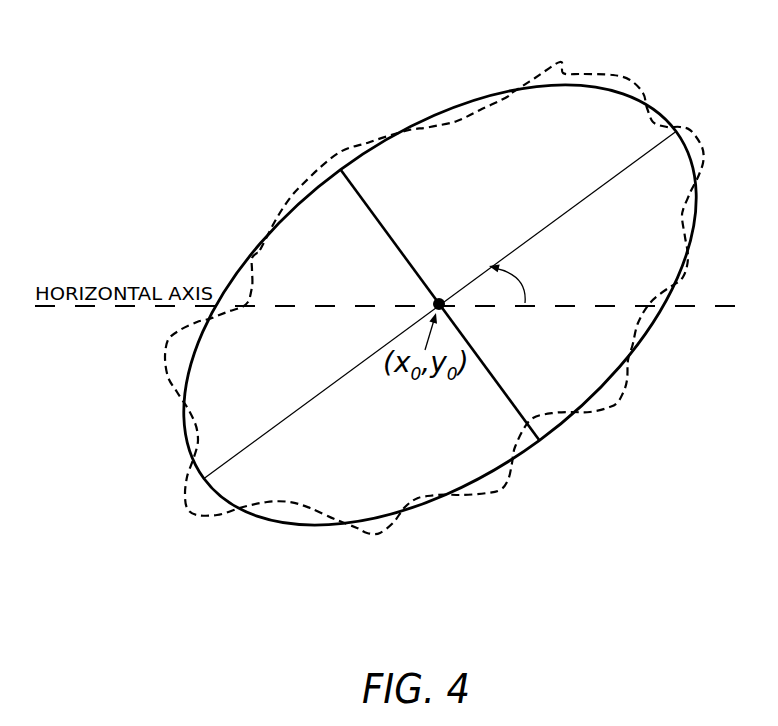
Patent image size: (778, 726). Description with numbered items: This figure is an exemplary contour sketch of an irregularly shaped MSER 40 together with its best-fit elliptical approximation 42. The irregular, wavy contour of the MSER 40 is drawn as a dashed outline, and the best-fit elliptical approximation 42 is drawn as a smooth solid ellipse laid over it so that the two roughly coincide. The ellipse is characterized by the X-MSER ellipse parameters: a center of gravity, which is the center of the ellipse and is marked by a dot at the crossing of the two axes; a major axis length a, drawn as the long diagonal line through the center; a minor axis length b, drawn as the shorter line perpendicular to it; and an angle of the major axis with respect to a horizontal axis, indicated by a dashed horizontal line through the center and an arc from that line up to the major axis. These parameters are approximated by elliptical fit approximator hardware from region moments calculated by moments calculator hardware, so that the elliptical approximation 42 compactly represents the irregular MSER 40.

The irregularly shaped MSER 40 is at (292, 197).
The best-fit elliptical approximation 42 is at (452, 108).
The major axis length a is at (440, 305).
The minor axis length b is at (440, 305).